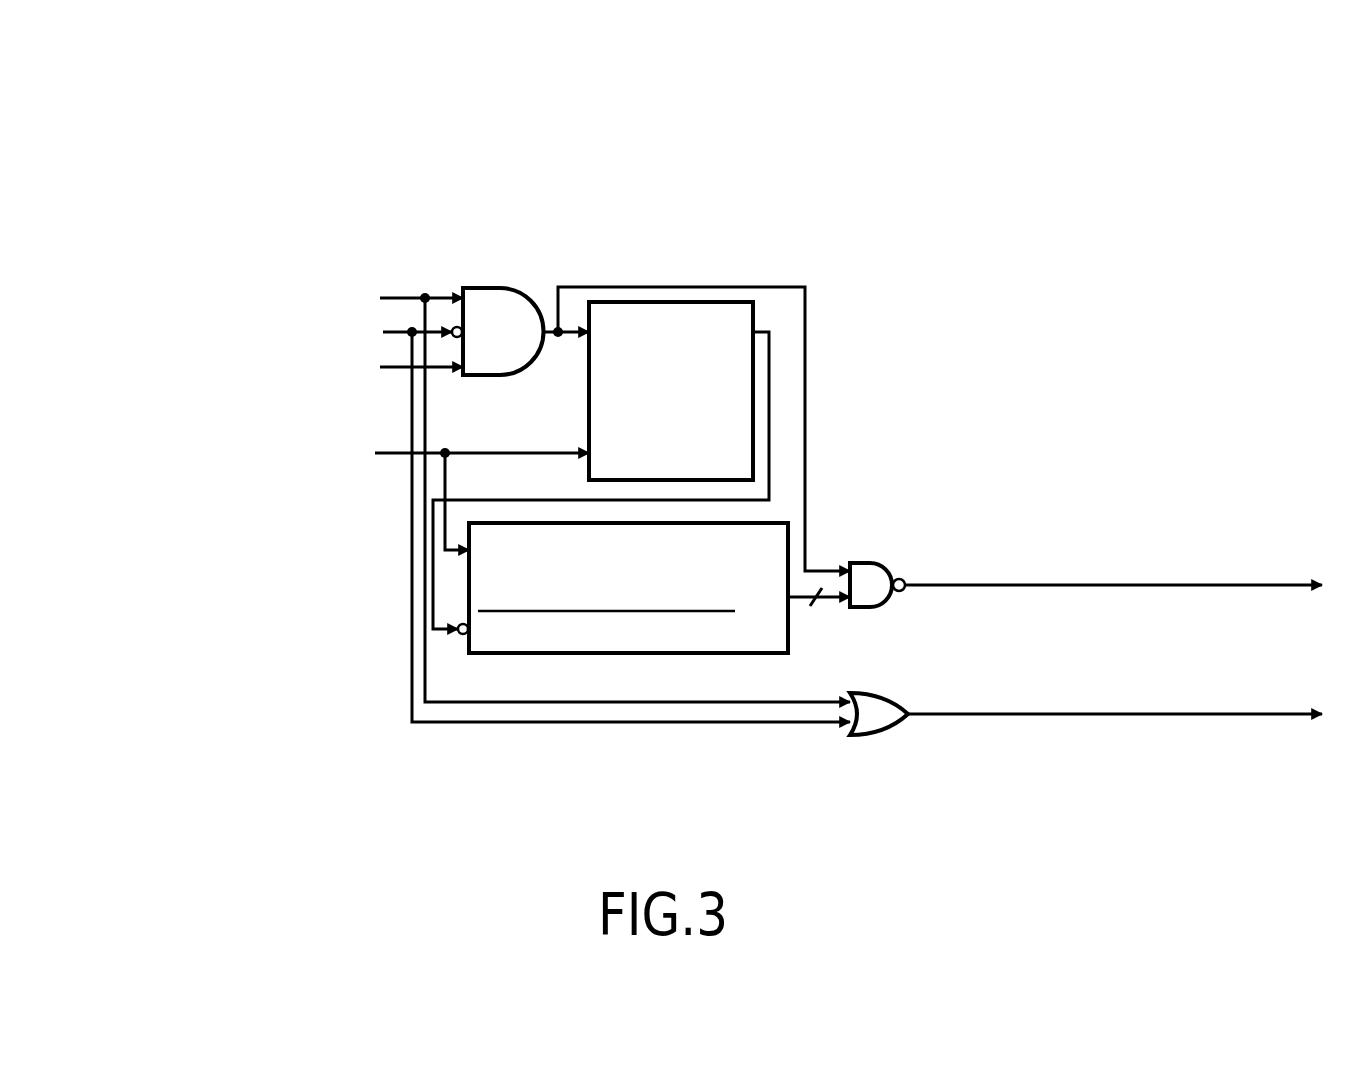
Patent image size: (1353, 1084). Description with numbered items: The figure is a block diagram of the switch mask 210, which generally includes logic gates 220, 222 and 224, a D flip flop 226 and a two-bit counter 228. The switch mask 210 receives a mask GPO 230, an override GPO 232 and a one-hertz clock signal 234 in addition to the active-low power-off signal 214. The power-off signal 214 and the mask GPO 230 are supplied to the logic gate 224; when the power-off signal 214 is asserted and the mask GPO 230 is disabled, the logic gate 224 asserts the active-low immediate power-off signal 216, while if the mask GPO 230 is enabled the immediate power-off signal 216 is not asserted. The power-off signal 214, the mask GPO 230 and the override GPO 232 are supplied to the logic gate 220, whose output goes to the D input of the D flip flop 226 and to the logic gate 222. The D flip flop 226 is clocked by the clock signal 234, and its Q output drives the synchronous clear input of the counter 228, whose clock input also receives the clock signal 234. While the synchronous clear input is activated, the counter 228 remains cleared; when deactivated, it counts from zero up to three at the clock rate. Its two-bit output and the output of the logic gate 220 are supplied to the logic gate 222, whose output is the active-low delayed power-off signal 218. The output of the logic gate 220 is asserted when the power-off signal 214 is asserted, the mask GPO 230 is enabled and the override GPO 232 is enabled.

The switch mask 210 is at (780, 248).
The power-off signal 214 is at (125, 328).
The immediate power-off signal 216 is at (1102, 742).
The delayed power-off signal 218 is at (1044, 530).
The logic gate 220 is at (506, 287).
The logic gate 222 is at (858, 563).
The logic gate 224 is at (880, 735).
The D flip flop 226 is at (663, 320).
The 2-bit counter 228 is at (755, 655).
The mask GPO 230 is at (246, 275).
The override GPO 232 is at (203, 385).
The 1-Hz clock signal 234 is at (283, 470).